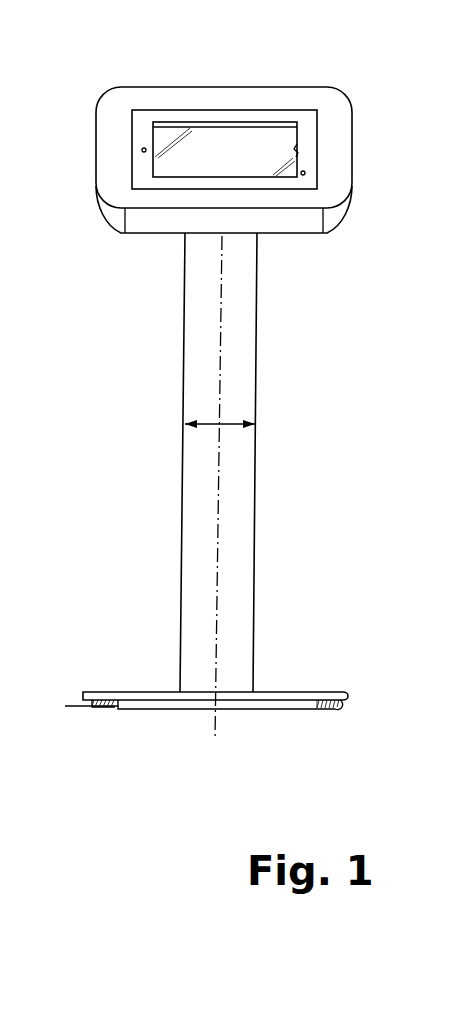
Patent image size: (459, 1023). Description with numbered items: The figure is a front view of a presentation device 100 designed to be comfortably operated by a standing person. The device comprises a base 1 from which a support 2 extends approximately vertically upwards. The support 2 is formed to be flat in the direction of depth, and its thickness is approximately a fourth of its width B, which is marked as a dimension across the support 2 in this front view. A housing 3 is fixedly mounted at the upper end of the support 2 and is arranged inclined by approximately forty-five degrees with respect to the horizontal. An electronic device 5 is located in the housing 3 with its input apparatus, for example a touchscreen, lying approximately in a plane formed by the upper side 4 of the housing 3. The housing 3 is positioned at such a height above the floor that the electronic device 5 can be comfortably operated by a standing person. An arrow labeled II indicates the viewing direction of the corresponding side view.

The presentation device 100 is at (82, 82).
The base 1 is at (137, 692).
The support 2 is at (230, 530).
The housing 3 is at (333, 150).
The upper side 4 is at (172, 107).
The electronic device 5 is at (230, 153).
The width B is at (218, 424).
The view II is at (357, 363).